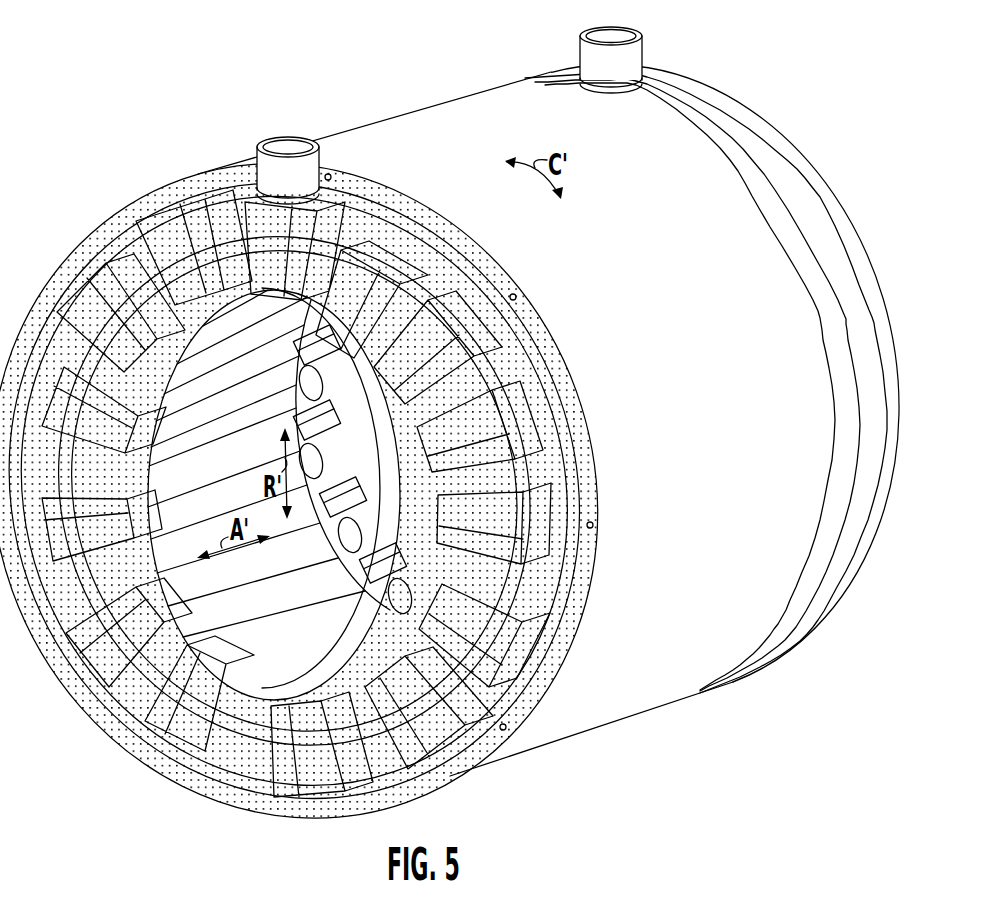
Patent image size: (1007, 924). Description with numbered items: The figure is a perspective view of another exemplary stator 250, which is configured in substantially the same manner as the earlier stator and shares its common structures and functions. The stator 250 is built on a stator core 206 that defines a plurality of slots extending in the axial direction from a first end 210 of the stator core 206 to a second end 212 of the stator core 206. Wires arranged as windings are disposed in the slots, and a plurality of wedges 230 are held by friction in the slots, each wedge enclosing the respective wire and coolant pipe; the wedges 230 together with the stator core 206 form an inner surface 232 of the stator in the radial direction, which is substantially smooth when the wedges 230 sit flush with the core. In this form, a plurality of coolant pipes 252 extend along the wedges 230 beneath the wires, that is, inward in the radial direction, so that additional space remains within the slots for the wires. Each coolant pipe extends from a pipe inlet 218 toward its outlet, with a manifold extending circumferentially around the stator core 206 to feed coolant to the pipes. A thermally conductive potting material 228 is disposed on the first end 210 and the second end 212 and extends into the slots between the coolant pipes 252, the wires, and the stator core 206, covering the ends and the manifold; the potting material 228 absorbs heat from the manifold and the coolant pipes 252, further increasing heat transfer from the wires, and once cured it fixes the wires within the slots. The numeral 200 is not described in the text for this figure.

The electric machine 200 is at (122, 62).
The stator 250 is at (205, 82).
The pipe inlet 218 is at (172, 230).
The coolant pipes 252 is at (193, 230).
The stator core 206 is at (722, 192).
The second end 212 is at (812, 300).
The first end 210 is at (593, 447).
The wedges 230 is at (165, 375).
The thermally conductive potting material 228 is at (110, 683).
The inner surface 232 is at (230, 623).